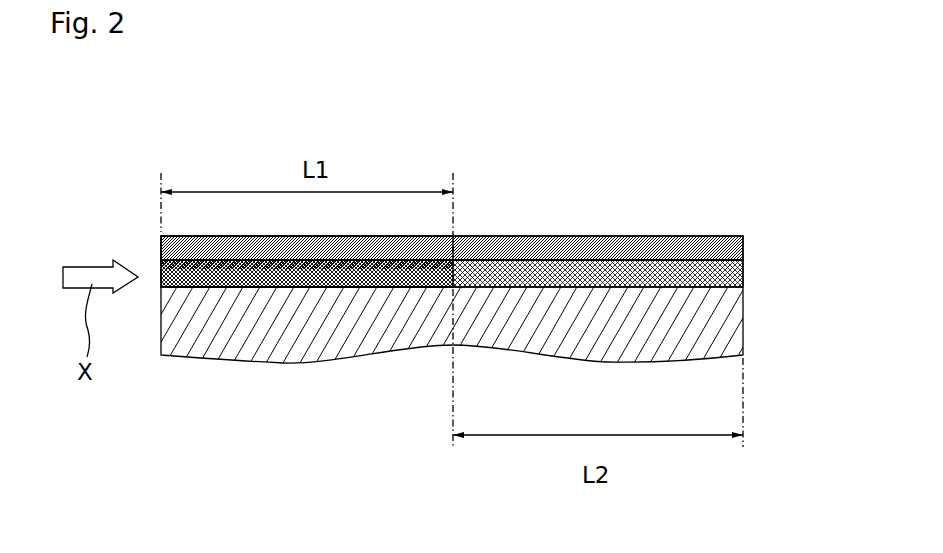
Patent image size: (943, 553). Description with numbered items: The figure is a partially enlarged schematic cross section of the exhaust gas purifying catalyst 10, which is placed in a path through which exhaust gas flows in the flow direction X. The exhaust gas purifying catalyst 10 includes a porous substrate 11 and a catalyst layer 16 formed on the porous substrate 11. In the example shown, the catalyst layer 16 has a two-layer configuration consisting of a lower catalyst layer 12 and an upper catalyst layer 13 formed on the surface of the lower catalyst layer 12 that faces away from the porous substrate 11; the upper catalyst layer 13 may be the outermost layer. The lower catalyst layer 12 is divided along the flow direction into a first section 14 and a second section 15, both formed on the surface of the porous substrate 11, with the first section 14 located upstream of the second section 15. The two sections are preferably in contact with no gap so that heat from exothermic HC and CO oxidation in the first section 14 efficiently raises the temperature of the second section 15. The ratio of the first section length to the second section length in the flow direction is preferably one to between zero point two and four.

The exhaust gas purifying catalyst 10 is at (742, 105).
The porous substrate 11 is at (635, 322).
The lower catalyst layer 12 is at (363, 432).
The upper catalyst layer 13 is at (482, 243).
The first section 14 is at (313, 277).
The second section 15 is at (460, 286).
The catalyst layer 16 is at (407, 480).